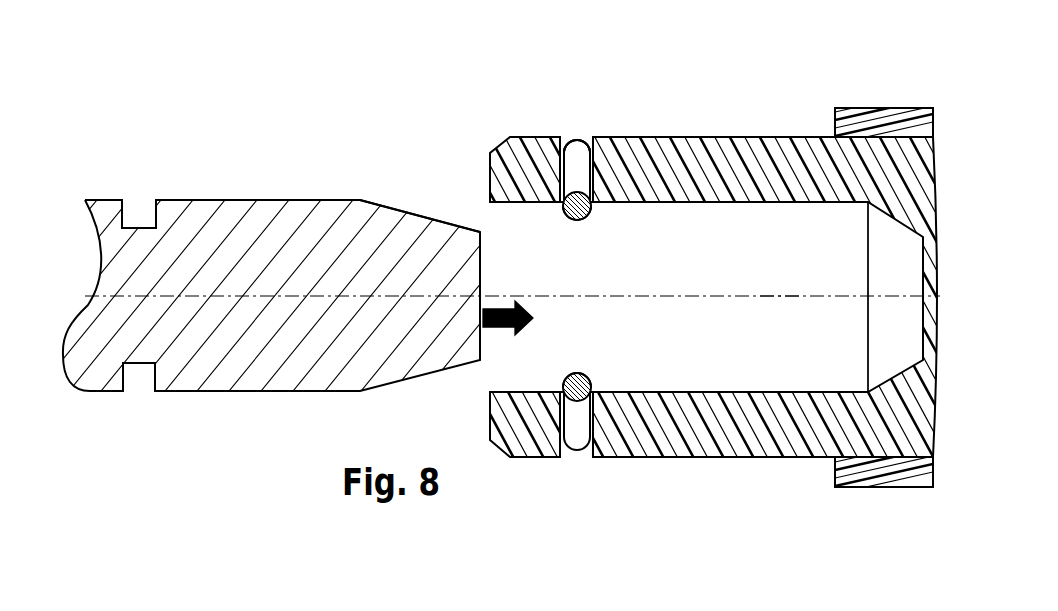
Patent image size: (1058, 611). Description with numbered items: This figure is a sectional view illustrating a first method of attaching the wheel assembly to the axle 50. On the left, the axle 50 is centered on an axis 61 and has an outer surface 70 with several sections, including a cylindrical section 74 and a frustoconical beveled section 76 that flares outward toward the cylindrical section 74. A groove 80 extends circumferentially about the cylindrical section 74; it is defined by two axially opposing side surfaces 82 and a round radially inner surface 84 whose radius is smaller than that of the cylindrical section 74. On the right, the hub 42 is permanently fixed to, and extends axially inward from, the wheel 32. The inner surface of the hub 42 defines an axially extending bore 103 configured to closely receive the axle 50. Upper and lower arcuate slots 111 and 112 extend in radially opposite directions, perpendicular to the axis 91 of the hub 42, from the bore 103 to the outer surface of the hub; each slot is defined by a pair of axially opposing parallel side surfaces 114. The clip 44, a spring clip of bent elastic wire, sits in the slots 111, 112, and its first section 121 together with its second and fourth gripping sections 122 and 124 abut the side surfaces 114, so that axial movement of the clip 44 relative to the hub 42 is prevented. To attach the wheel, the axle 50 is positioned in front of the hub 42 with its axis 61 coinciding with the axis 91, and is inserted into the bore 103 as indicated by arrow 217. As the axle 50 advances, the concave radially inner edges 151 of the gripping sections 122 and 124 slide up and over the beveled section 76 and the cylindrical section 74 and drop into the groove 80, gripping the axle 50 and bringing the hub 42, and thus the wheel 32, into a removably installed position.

The wheel 32 is at (856, 112).
The hub 42 is at (488, 69).
The clip 44 is at (571, 125).
The axle 50 is at (305, 194).
The axis 61 is at (700, 296).
The outer surface 70 is at (257, 200).
The cylindrical section 74 is at (340, 200).
The frustoconical beveled section 76 is at (420, 216).
The groove 80 is at (135, 192).
The side surfaces 82 is at (122, 207).
The radially inner surface 84 is at (139, 228).
The axis 91 is at (760, 296).
The bore 103 is at (722, 351).
The upper arcuate slot 111 is at (587, 123).
The lower arcuate slot 112 is at (578, 465).
The side surfaces 114 is at (557, 136).
The first section 121 is at (563, 135).
The second section 122 is at (577, 221).
The fourth section 124 is at (589, 378).
The radially inner edge 151 is at (566, 215).
The arrow 217 is at (500, 330).